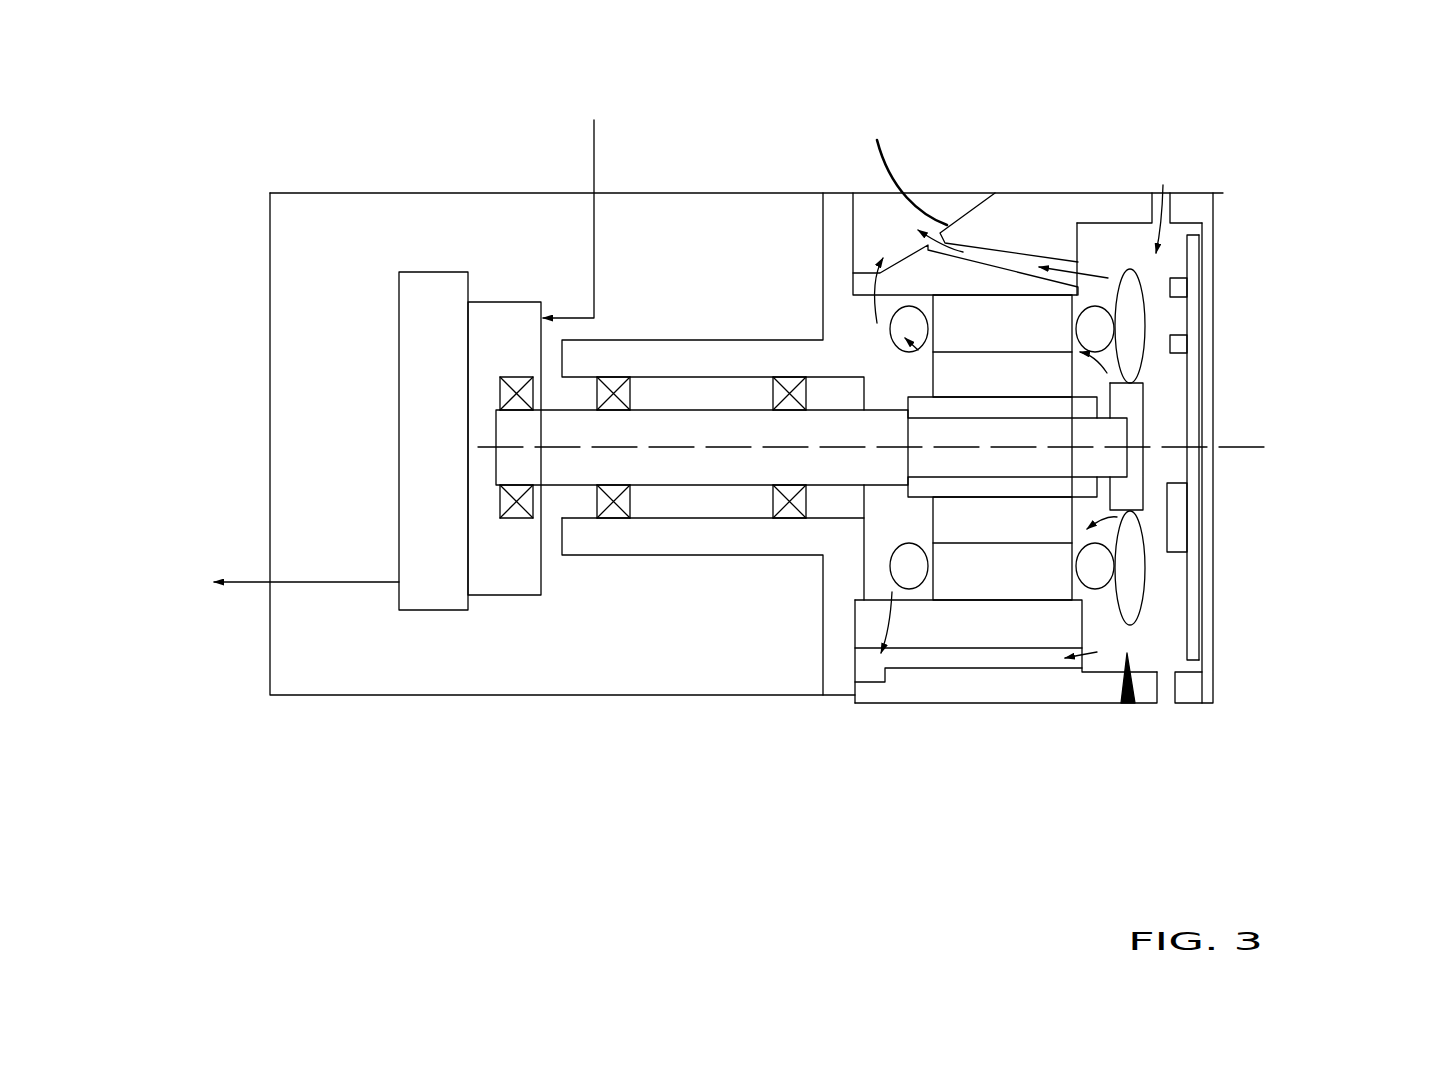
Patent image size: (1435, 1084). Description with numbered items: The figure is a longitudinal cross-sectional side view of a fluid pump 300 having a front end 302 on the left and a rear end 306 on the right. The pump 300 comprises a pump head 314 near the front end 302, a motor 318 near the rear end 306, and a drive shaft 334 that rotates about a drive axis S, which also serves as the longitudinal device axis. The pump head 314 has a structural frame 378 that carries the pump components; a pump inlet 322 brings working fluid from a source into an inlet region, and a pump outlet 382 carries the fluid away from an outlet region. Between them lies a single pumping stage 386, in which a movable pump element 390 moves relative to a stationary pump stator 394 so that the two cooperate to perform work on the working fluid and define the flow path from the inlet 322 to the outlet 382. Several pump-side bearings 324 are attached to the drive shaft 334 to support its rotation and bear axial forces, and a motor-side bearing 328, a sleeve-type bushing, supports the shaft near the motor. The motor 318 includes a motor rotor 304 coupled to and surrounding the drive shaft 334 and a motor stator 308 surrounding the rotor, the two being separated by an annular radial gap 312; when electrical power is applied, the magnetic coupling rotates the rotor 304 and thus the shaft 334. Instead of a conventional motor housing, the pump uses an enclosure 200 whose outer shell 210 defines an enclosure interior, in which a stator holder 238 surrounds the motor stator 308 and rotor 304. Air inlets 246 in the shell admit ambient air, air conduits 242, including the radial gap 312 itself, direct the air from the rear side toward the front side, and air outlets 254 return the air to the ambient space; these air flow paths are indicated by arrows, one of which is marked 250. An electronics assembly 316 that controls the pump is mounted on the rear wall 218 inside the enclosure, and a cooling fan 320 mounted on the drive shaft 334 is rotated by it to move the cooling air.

The fluid pump 300 is at (235, 163).
The pump head 314 is at (358, 165).
The structural frame 378 is at (442, 193).
The pump inlet 322 is at (598, 140).
The pumping stage 386 is at (358, 315).
The front end 302 is at (193, 328).
The pump stator 394 is at (428, 612).
The movable pump element 390 is at (497, 597).
The drive shaft 334 is at (496, 430).
The drive axis S is at (527, 447).
The pump outlet 382 is at (255, 583).
The pump-side bearings 324 is at (532, 502).
The motor 318 is at (856, 365).
The air outlets 254 is at (713, 868).
The air conduits 242 is at (1032, 252).
The radial gap 312 is at (990, 347).
The outer shell 210 is at (1117, 200).
The air inlets 246 is at (1177, 192).
The enclosure 200 is at (1247, 188).
The rear wall 218 is at (1208, 265).
The rear end 306 is at (1362, 343).
The cooling fan 320 is at (1145, 362).
The motor-side bearing 328 is at (1100, 397).
The electronics assembly 316 is at (1180, 527).
The air flow 250 is at (1132, 705).
The stator holder 238 is at (1015, 643).
The motor rotor 304 is at (1017, 520).
The motor stator 308 is at (965, 580).